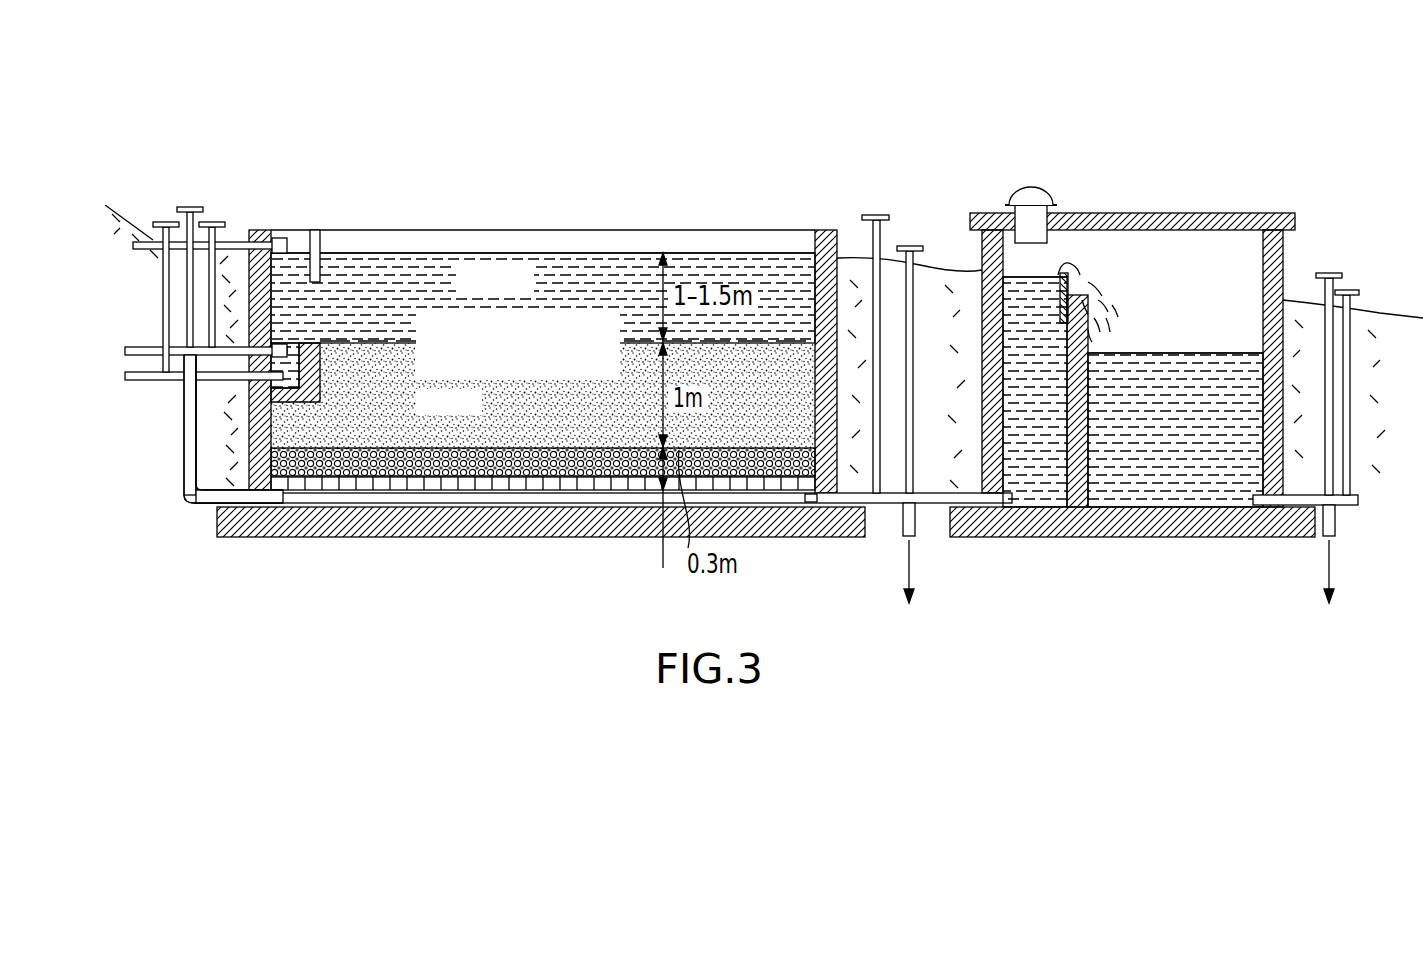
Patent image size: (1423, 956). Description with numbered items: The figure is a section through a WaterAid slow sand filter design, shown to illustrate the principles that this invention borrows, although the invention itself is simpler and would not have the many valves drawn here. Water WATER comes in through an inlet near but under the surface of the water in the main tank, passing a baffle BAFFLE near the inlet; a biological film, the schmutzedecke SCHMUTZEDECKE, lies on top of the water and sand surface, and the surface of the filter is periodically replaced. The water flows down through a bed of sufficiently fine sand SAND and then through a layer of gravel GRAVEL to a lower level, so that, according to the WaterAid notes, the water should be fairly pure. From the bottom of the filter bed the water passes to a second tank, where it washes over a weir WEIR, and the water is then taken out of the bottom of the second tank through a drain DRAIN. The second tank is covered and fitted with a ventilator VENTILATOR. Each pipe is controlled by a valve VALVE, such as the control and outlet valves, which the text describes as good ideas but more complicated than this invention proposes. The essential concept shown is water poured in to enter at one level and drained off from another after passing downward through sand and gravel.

The water WATER is at (543, 298).
The biological film SCHMUTZEDECKE is at (567, 346).
The sand SAND is at (543, 395).
The gravel GRAVEL is at (372, 463).
The baffle BAFFLE is at (320, 243).
The drain DRAIN is at (907, 247).
The weir WEIR is at (1097, 376).
The ventilator VENTILATOR is at (1050, 188).
The valve VALVE is at (1347, 290).